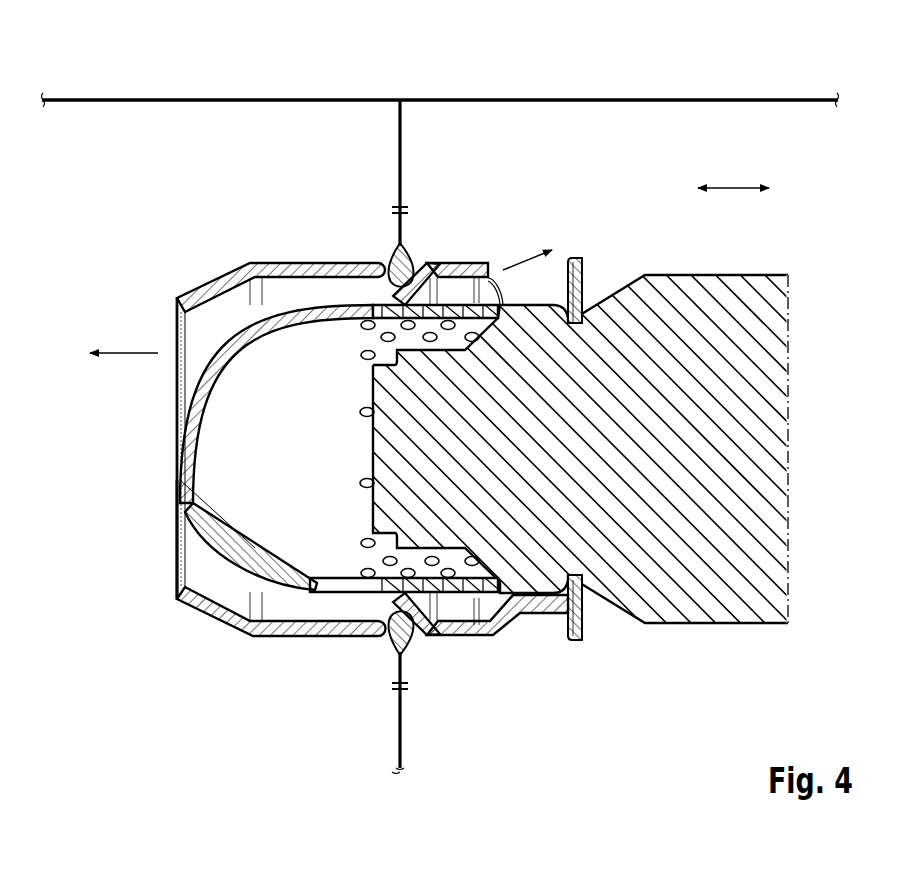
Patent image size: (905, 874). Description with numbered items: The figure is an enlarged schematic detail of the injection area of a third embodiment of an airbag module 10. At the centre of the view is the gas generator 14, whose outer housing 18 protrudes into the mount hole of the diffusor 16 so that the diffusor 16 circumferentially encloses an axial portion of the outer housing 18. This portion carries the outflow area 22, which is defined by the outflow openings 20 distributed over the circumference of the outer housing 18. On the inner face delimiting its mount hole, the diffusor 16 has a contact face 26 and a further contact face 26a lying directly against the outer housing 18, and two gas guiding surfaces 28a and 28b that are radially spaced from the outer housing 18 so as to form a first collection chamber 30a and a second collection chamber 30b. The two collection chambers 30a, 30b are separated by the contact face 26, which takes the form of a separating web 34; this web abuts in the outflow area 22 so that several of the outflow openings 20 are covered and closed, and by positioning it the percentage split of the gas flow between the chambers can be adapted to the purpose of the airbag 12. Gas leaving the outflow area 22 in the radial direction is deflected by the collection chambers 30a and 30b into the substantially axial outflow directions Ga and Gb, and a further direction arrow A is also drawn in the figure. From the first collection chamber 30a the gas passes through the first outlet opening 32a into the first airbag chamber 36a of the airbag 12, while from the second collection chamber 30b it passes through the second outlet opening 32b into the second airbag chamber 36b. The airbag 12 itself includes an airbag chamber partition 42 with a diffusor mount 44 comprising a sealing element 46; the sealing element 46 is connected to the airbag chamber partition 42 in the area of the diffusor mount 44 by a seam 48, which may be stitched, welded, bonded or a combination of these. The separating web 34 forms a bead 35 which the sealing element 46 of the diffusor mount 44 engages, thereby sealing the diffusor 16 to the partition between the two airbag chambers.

The airbag module 10 is at (146, 79).
The airbag 12 is at (711, 99).
The gas generator 14 is at (790, 356).
The diffusor 16 is at (266, 248).
The outer housing 18 is at (257, 547).
The outflow openings 20 is at (360, 412).
The outflow area 22 is at (445, 294).
The contact face 26 is at (393, 291).
The separating web 34 is at (404, 448).
The contact face 26a is at (531, 604).
The gas guiding surface 28a is at (307, 280).
The gas guiding surface 28b is at (472, 280).
The first collection chamber 30a is at (283, 618).
The second collection chamber 30b is at (467, 609).
The first outlet opening 32a is at (186, 560).
The second outlet opening 32b is at (570, 257).
The bead 35 is at (384, 638).
The first airbag chamber 36a is at (153, 169).
The second airbag chamber 36b is at (633, 169).
The airbag chamber partition 42 is at (403, 136).
The diffusor mount 44 is at (390, 646).
The sealing element 46 is at (390, 262).
The seam 48 is at (404, 692).
The direction A is at (733, 188).
The axial outflow direction Ga is at (127, 353).
The axial outflow direction Gb is at (509, 269).